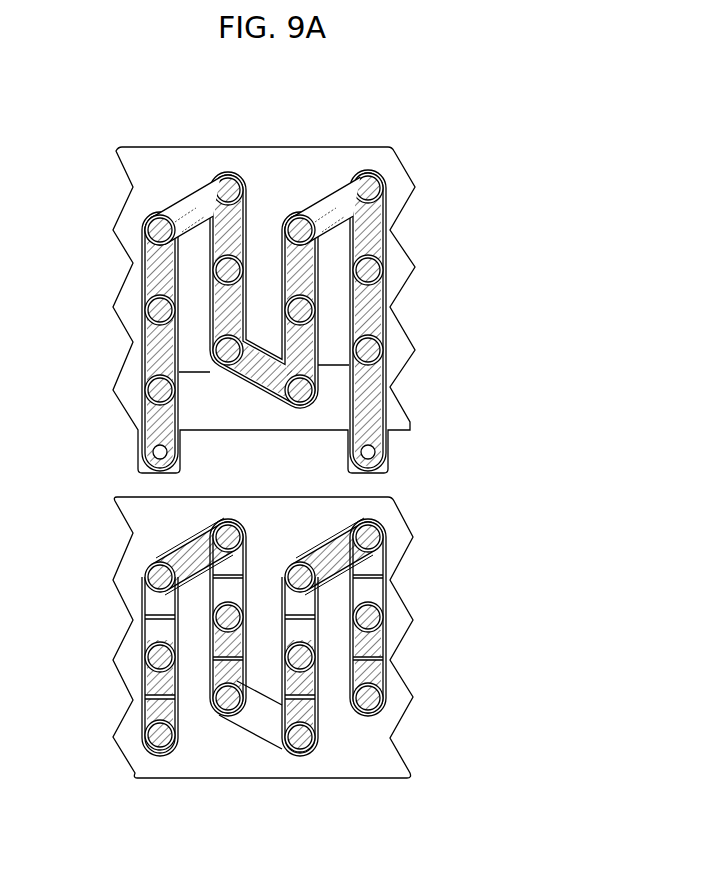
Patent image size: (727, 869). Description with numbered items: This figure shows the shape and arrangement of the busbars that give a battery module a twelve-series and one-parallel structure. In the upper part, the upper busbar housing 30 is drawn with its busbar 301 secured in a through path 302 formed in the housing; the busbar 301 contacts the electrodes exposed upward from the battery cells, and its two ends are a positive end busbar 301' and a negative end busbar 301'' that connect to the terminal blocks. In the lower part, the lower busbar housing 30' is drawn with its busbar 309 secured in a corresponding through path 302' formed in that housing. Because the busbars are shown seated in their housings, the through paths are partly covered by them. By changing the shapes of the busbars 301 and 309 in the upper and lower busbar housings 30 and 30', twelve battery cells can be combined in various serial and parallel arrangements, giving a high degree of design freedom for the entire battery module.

The upper busbar housing 30 is at (318, 310).
The busbar 301 is at (136, 186).
The through path 302 is at (334, 179).
The positive end busbar 301' is at (119, 341).
The negative end busbar 301'' is at (413, 320).
The lower busbar housing 30' is at (327, 637).
The busbar 309 is at (382, 530).
The through path 302' is at (261, 762).